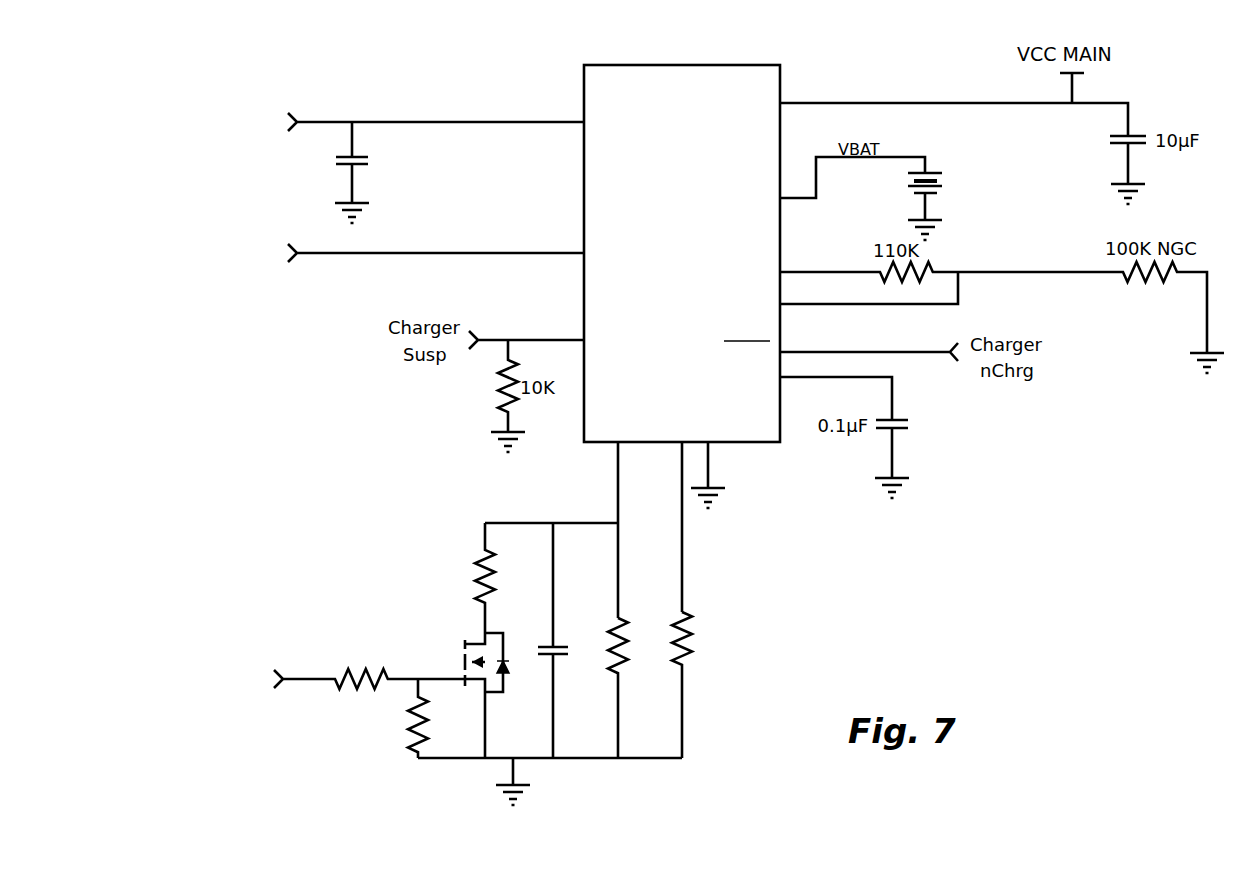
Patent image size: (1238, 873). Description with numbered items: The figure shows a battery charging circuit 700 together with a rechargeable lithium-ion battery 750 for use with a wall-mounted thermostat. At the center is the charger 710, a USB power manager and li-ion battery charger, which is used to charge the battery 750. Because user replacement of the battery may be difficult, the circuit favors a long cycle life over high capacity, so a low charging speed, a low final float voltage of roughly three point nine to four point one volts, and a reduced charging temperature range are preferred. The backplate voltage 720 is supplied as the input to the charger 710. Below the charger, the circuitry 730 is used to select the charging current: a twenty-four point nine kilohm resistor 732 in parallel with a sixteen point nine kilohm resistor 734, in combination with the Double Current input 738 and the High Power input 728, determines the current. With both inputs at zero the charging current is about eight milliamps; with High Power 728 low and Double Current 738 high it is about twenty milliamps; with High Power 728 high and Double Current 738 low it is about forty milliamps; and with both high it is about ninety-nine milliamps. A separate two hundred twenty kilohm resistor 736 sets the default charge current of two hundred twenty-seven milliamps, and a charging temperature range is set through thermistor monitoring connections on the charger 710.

The battery charging circuit 700 is at (1036, 664).
The charger 710 is at (698, 193).
The backplate voltage 720 is at (287, 62).
The High Power input 728 is at (295, 274).
The circuitry 730 is at (318, 567).
The resistor 732 is at (654, 681).
The resistor 734 is at (465, 578).
The resistor 736 is at (768, 648).
The Double Current input 738 is at (268, 716).
The rechargeable battery 750 is at (953, 174).